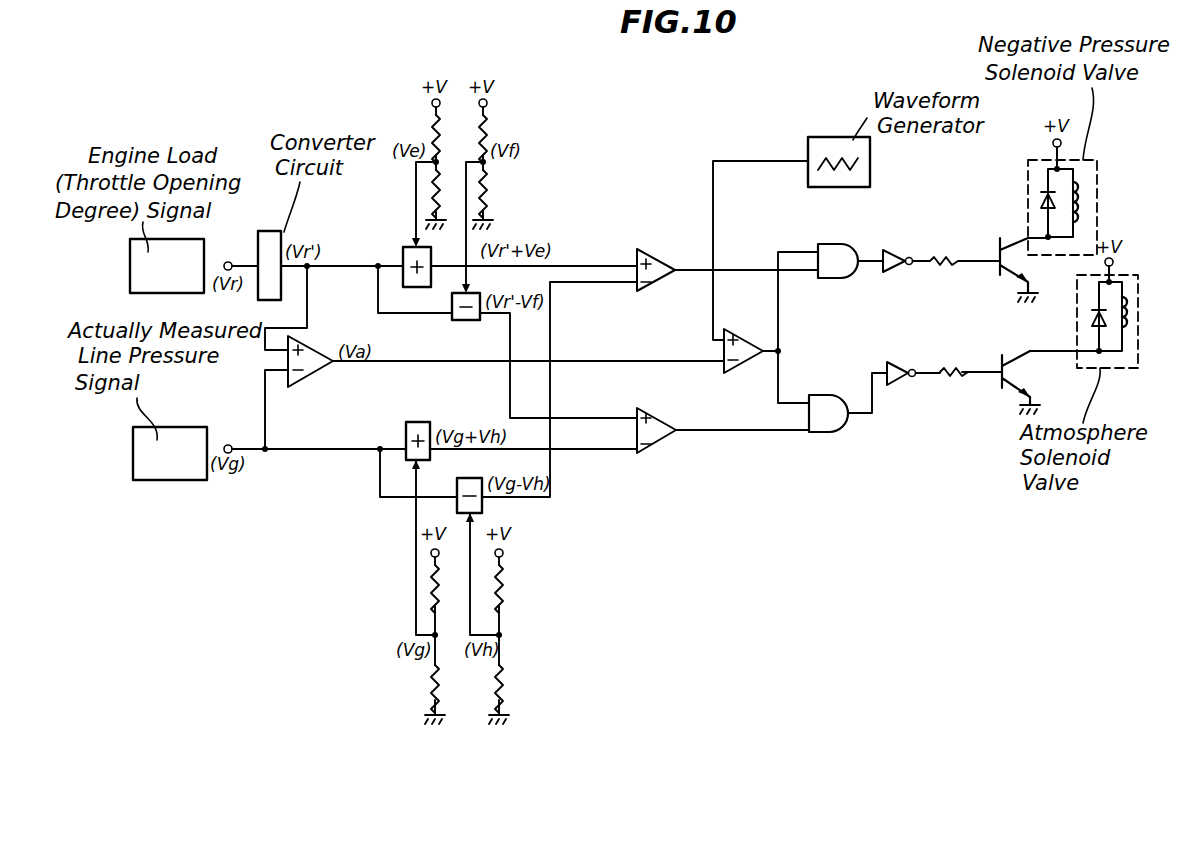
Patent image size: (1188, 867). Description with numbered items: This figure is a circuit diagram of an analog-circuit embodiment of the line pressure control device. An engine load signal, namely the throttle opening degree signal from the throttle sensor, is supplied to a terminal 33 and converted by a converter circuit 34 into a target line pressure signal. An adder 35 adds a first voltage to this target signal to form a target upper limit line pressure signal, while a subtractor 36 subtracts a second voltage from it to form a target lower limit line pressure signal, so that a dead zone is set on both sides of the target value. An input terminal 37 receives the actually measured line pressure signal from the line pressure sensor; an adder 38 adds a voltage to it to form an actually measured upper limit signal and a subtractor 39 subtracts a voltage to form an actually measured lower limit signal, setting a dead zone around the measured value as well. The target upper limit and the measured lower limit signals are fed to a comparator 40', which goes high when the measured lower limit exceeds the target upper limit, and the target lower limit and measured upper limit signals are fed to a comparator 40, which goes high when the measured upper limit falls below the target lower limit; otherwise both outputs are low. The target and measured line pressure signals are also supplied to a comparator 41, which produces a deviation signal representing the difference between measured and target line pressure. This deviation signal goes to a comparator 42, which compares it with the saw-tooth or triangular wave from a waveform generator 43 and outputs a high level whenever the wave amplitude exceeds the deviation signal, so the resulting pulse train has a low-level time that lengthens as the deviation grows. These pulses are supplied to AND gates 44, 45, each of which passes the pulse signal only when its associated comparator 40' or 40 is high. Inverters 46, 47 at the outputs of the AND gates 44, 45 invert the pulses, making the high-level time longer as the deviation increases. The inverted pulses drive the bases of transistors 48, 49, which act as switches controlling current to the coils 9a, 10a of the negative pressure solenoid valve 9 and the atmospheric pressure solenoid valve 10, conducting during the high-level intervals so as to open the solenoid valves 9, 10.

The negative pressure solenoid valve 9 is at (1097, 172).
The coil 9a is at (1078, 200).
The atmospheric pressure solenoid valve 10 is at (1138, 302).
The coil 10a is at (1126, 325).
The terminal 33 is at (228, 262).
The converter circuit 34 is at (275, 222).
The adder 35 is at (403, 255).
The subtractor 36 is at (452, 322).
The input terminal 37 is at (228, 444).
The adder 38 is at (418, 422).
The subtractor 39 is at (485, 507).
The comparator 40 is at (667, 441).
The comparator 40' is at (640, 284).
The comparator 41 is at (308, 343).
The comparator 42 is at (742, 371).
The waveform generator 43 is at (831, 137).
The AND gate 44 is at (826, 244).
The AND gate 45 is at (828, 438).
The inverter 46 is at (896, 249).
The inverter 47 is at (899, 386).
The transistor 48 is at (1005, 278).
The transistor 49 is at (1010, 353).